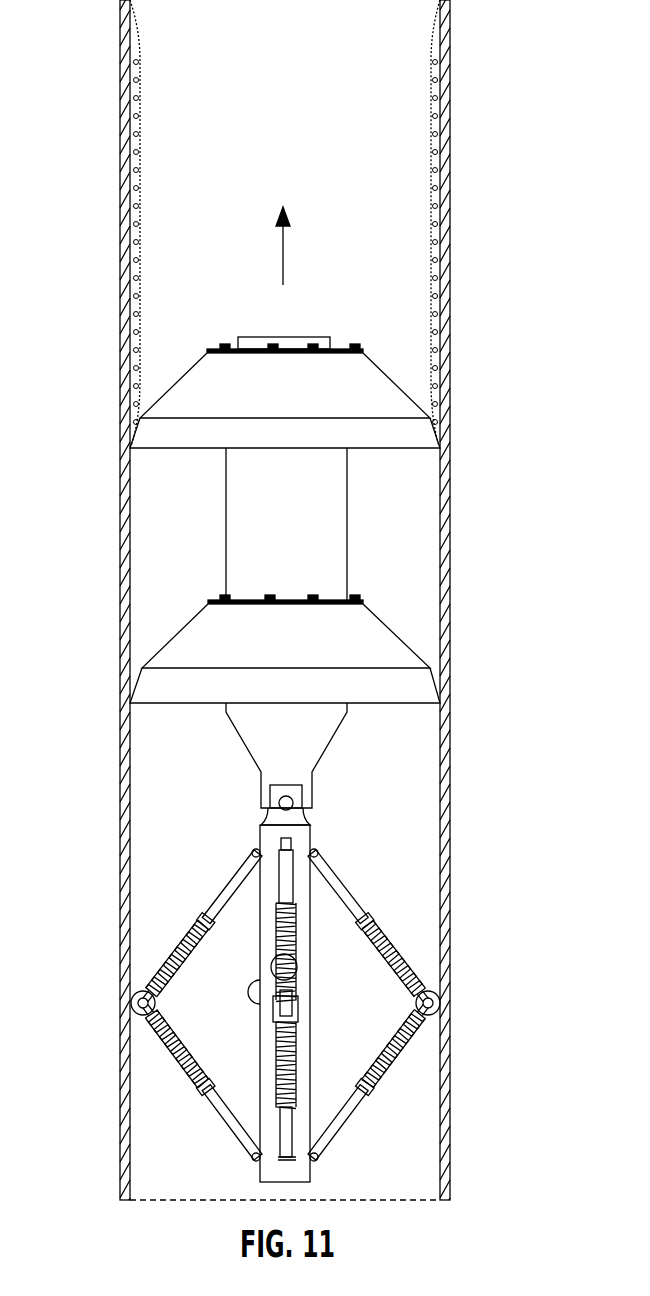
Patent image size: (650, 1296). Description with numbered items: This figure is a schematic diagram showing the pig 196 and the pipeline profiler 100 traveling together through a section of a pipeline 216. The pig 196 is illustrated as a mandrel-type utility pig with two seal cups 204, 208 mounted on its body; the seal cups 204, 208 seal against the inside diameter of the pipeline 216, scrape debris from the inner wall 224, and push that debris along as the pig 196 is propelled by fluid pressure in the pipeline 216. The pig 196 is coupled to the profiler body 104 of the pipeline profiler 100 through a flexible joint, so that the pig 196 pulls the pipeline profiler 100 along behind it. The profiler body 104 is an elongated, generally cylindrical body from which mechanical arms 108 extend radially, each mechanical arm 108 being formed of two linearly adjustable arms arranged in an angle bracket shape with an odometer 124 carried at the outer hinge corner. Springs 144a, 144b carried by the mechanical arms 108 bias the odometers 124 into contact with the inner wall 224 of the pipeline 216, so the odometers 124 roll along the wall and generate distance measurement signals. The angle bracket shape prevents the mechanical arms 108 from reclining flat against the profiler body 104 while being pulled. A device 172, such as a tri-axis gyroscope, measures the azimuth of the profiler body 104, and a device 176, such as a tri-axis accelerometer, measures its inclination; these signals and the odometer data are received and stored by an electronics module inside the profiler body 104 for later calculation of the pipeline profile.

The pipeline profiler 100 is at (356, 1135).
The profiler body 104 is at (311, 834).
The mechanical arms 108 is at (223, 880).
The distance measuring wheel (odometer) 124 is at (134, 999).
The spring 144a is at (400, 951).
The spring 144b is at (400, 1060).
The azimuth measuring device 172 is at (299, 967).
The inclination measuring device 176 is at (248, 992).
The pig 196 is at (160, 652).
The seal cup 204 is at (437, 434).
The seal cup 208 is at (438, 681).
The pipeline 216 is at (122, 507).
The inner wall 224 is at (440, 515).